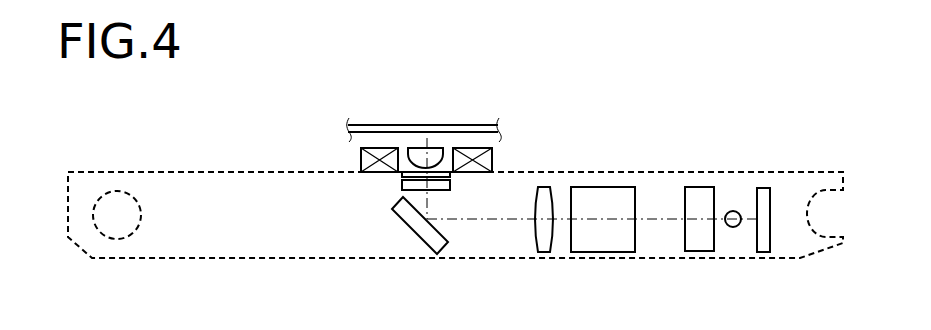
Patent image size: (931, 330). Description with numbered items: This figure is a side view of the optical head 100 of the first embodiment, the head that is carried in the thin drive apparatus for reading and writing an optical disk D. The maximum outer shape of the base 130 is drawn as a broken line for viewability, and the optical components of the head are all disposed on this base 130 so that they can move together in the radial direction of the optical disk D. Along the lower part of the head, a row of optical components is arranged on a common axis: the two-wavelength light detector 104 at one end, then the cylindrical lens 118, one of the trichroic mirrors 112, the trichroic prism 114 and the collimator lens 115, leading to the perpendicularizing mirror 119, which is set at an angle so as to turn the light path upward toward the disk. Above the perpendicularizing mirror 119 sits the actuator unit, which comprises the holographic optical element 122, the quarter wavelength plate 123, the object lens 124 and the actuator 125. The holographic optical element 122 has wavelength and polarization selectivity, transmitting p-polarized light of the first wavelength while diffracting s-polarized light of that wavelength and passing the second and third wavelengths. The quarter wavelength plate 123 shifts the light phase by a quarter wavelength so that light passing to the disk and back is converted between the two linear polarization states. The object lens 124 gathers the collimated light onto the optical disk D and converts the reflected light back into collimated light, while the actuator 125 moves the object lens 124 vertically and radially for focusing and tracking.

The optical head 100 is at (150, 127).
The base 130 is at (243, 172).
The optical disc D is at (393, 125).
The actuator 125 is at (361, 158).
The object lens 124 is at (437, 148).
The quarter wavelength plate 123 is at (402, 176).
The holographic optical element 122 is at (450, 188).
The perpendicularizing mirror 119 is at (410, 231).
The collimator lens 115 is at (543, 187).
The trichroic prism 114 is at (610, 187).
The trichroic mirror 112 is at (695, 187).
The cylindrical lens 118 is at (733, 211).
The two-wavelength light detector 104 is at (765, 187).